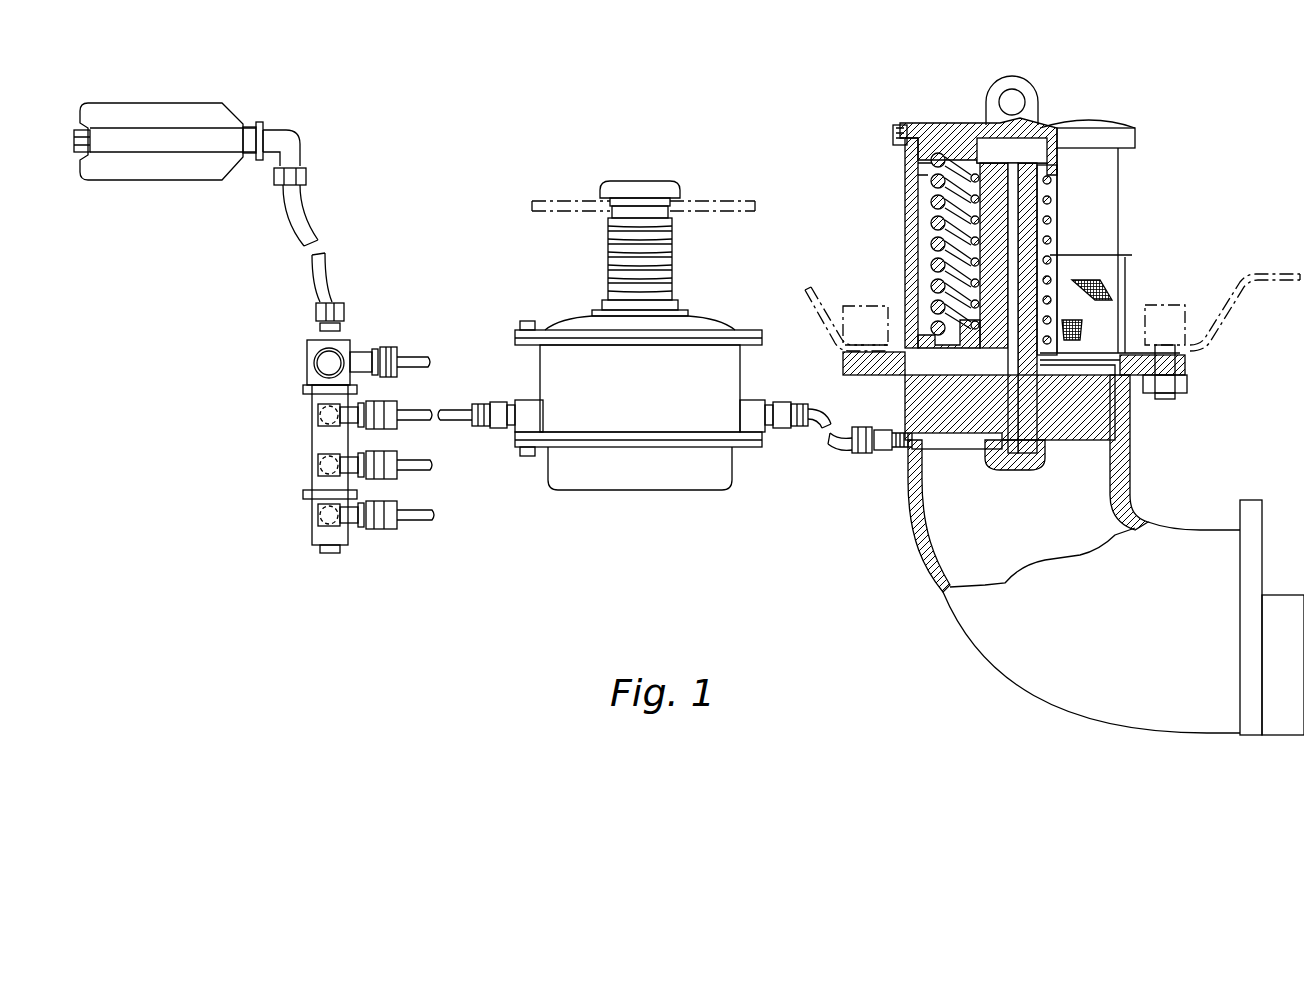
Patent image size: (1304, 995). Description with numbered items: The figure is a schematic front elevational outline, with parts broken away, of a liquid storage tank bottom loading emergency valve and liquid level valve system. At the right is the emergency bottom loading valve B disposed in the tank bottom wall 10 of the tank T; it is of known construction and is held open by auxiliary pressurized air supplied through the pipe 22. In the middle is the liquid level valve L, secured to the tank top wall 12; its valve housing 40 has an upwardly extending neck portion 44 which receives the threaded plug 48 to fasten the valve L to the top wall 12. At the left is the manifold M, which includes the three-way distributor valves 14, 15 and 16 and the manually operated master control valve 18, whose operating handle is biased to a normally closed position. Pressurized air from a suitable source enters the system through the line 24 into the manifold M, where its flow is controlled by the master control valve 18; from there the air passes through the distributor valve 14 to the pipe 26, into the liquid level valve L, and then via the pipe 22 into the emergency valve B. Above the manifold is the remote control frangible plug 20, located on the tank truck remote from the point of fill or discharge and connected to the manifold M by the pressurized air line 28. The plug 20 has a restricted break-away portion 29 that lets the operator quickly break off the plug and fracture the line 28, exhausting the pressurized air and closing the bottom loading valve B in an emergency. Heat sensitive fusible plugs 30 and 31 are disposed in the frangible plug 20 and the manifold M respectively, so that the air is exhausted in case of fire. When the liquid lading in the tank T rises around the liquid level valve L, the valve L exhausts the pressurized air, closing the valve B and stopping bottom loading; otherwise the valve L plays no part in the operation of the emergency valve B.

The tank bottom wall 10 is at (1244, 274).
The tank top wall 12 is at (587, 200).
The three-way distributor valve 14 is at (318, 413).
The three-way distributor valve 15 is at (318, 462).
The three-way distributor valve 16 is at (318, 512).
The master control valve 18 is at (310, 360).
The remote control frangible plug 20 is at (146, 182).
The pipe 22 is at (832, 446).
The line 24 is at (411, 356).
The pipe 26 is at (412, 404).
The pressurized air line 28 is at (308, 228).
The break-away portion 29 is at (258, 122).
The heat sensitive fusible plug 30 is at (82, 138).
The heat sensitive fusible plug 31 is at (332, 554).
The valve housing 40 is at (742, 380).
The neck portion 44 is at (672, 258).
The threaded plug 48 is at (640, 181).
The manifold M is at (350, 446).
The liquid level valve L is at (661, 314).
The tank T is at (823, 288).
The emergency bottom loading valve B is at (1122, 220).